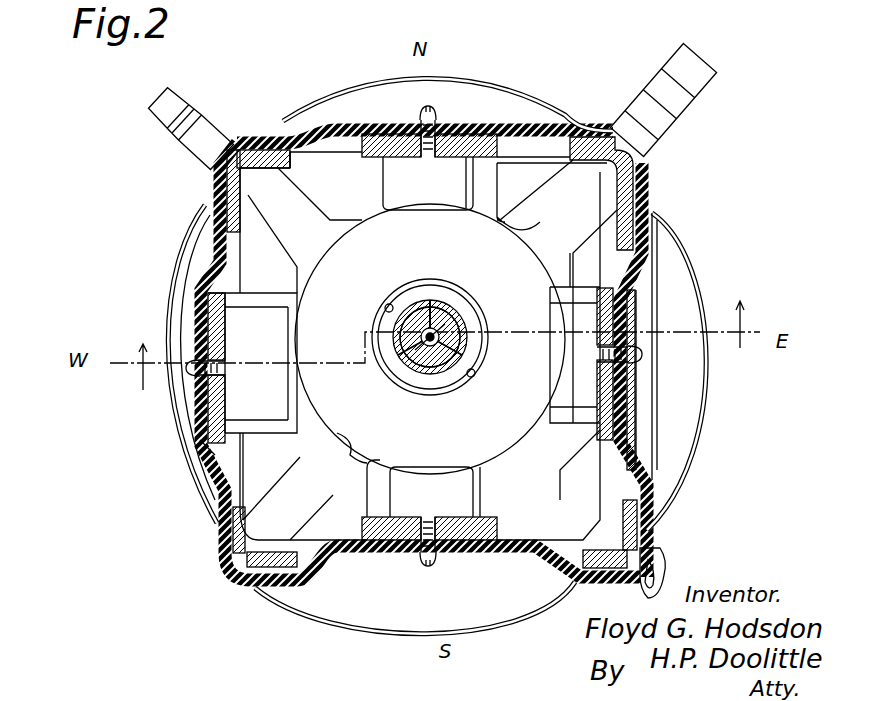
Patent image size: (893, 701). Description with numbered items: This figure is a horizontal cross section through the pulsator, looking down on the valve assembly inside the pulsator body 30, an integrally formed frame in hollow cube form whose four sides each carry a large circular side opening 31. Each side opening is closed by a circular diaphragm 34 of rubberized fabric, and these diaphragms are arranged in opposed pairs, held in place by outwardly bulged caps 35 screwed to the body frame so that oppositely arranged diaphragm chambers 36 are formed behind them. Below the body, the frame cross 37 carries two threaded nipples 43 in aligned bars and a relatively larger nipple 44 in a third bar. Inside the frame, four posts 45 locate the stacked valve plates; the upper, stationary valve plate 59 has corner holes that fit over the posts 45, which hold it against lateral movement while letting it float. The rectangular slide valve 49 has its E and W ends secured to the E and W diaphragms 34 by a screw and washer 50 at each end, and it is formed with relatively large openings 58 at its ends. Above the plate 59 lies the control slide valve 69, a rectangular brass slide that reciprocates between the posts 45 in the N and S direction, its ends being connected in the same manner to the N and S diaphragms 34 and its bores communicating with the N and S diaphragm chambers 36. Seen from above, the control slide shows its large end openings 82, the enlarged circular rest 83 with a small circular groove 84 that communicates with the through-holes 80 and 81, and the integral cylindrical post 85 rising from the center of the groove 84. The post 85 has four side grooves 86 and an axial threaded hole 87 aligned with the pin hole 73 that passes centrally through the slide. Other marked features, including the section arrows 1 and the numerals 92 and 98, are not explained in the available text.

The section line arrows 1 is at (439, 357).
The pulsator body 30 is at (235, 173).
The side openings 31 is at (303, 140).
The diaphragm 34 is at (527, 137).
The caps 35 is at (527, 103).
The diaphragm chambers 36 is at (477, 93).
The frame cross 37 is at (300, 518).
The threaded nipples 43 is at (197, 127).
The nipple 44 is at (697, 80).
The posts 45 is at (350, 448).
The slide valve 49 is at (215, 450).
The screw and washer 50 is at (417, 112).
The openings 58 is at (222, 432).
The upper stationary valve plate 59 is at (345, 440).
The control slide valve 69 is at (490, 198).
The pin hole 73 is at (425, 335).
The through-hole 80 is at (473, 377).
The through-hole 81 is at (391, 304).
The openings 82 is at (428, 183).
The circular rest 83 is at (380, 237).
The circular groove 84 is at (488, 318).
The cylindrical post 85 is at (440, 325).
The side grooves 86 is at (405, 365).
The threaded hole 87 is at (470, 347).
The inner ring 92 is at (455, 315).
The left pocket 98 is at (297, 380).